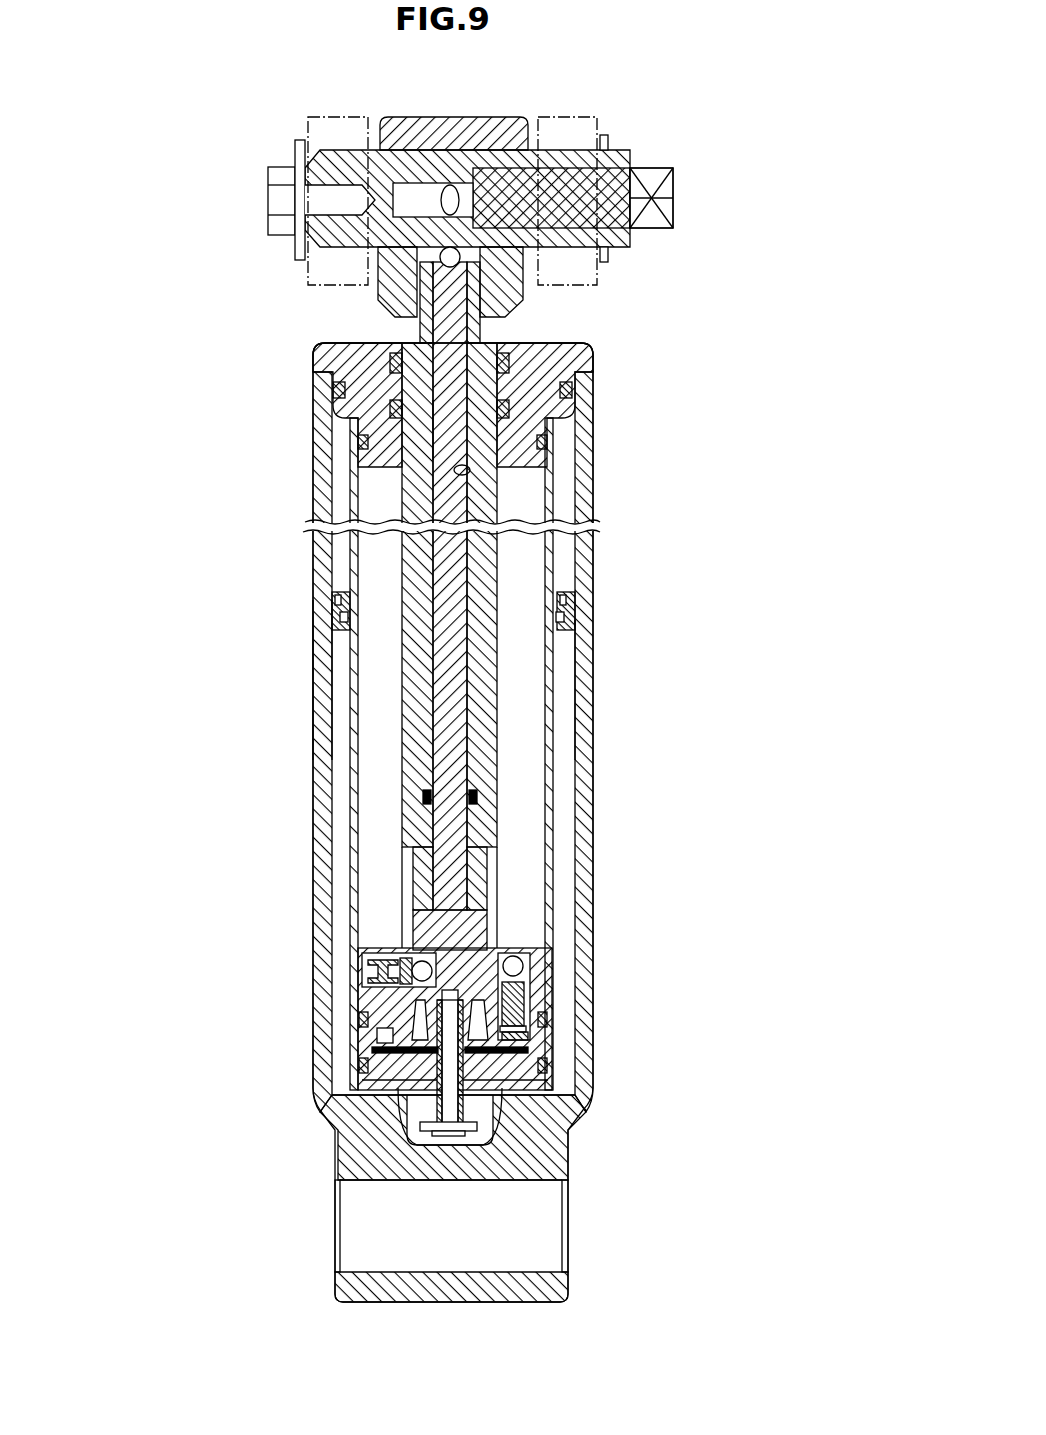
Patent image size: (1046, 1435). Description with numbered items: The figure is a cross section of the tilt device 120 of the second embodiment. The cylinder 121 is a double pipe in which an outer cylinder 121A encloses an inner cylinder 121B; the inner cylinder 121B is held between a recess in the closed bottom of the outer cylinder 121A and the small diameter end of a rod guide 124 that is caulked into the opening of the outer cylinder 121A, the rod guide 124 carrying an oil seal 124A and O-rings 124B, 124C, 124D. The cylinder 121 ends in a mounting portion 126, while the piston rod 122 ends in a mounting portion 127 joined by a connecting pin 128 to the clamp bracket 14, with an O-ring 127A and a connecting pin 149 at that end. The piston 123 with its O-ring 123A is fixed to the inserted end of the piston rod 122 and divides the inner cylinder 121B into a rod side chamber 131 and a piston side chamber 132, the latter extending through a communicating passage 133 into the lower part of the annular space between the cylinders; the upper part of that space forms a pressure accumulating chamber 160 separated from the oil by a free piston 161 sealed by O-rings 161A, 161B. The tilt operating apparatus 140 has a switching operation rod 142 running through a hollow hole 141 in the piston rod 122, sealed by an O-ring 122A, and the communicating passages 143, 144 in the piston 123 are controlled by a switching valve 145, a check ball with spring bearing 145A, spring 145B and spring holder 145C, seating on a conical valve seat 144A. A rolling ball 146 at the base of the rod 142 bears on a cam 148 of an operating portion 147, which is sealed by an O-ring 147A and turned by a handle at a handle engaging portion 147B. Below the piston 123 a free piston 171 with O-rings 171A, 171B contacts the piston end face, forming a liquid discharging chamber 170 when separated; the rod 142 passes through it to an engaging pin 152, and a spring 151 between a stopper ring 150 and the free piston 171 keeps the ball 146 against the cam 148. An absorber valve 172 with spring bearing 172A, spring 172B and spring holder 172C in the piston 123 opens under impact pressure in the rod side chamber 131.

The tilt device 120 is at (195, 182).
The connecting pin 149 is at (370, 143).
The mounting portion 127 is at (415, 120).
The O-ring 127A is at (505, 140).
The connecting pin 128 is at (602, 133).
The clamp bracket 14 is at (605, 118).
The O-ring 147A is at (630, 167).
The handle engaging portion 147B is at (660, 172).
The tilt operating apparatus 140 is at (680, 190).
The operating portion 147 is at (670, 220).
The cam 148 is at (460, 208).
The rolling ball 146 is at (455, 268).
The oil seal 124A is at (340, 341).
The rod guide 124 is at (338, 375).
The O-ring 124B is at (340, 392).
The O-ring 124C is at (347, 417).
The O-ring 124D is at (355, 446).
The pressure accumulating chamber 160 is at (338, 480).
The O-ring 161A is at (333, 600).
The free piston 161 is at (333, 609).
The O-ring 161B is at (333, 617).
The cylinder 121 is at (308, 640).
The outer cylinder 121A is at (320, 674).
The inner cylinder 121B is at (318, 700).
The switching operation rod 142 is at (458, 427).
The hollow hole 141 is at (466, 473).
The piston rod 122 is at (500, 607).
The rod side chamber 131 is at (528, 702).
The O-ring 122A is at (476, 800).
The switching valve 145 is at (410, 962).
The communicating passage 143 is at (400, 950).
The spring holder 145C is at (395, 975).
The spring 145B is at (383, 983).
The spring bearing 145A is at (372, 970).
The piston 123 is at (362, 1017).
The O-ring 123A is at (377, 1036).
The liquid discharging chamber 170 is at (365, 1048).
The free piston 171 is at (362, 1066).
The O-ring 171B is at (430, 1090).
The communicating passage 144 is at (435, 1127).
The engaging pin 152 is at (400, 1182).
The mounting portion 126 is at (350, 1290).
The valve seat 144A is at (485, 900).
The absorber valve 172 is at (520, 990).
The spring holder 172C is at (505, 955).
The stopper ring 150 is at (523, 966).
The spring 172B is at (530, 1000).
The spring bearing 172A is at (528, 1035).
The O-ring 171A is at (545, 1066).
The communicating passage 133 is at (552, 1082).
The spring 151 is at (500, 1118).
The piston side chamber 132 is at (560, 1150).